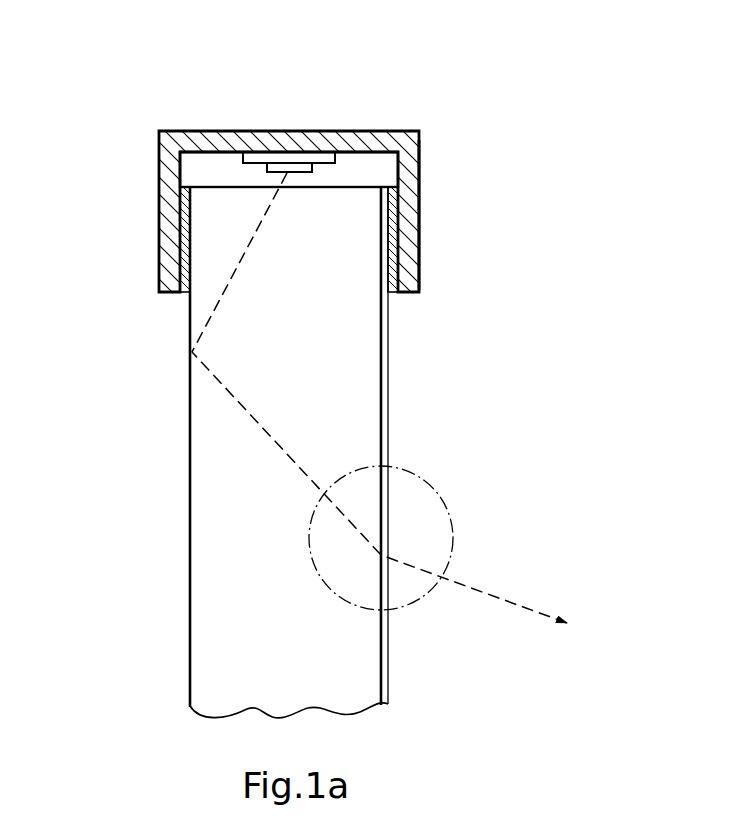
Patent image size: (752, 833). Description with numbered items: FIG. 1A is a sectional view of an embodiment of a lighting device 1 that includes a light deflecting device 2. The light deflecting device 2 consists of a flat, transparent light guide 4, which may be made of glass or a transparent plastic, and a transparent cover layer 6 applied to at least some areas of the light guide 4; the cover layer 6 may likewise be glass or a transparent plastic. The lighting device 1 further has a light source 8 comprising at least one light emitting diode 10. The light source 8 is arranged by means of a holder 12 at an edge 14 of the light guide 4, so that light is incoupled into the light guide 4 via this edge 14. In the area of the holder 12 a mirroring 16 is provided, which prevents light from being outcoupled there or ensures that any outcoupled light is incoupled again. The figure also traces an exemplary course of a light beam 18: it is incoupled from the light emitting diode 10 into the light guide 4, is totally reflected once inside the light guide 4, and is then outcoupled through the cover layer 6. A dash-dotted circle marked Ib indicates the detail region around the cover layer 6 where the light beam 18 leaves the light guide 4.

The lighting device 1 is at (463, 88).
The light deflecting device 2 is at (172, 527).
The light guide 4 is at (213, 450).
The cover layer 6 is at (385, 360).
The light source 8 is at (232, 113).
The light emitting diode 10 is at (278, 157).
The holder 12 is at (410, 170).
The edge 14 is at (360, 185).
The mirroring 16 is at (183, 233).
The light beam 18 is at (508, 603).
The detail region Ib is at (433, 490).